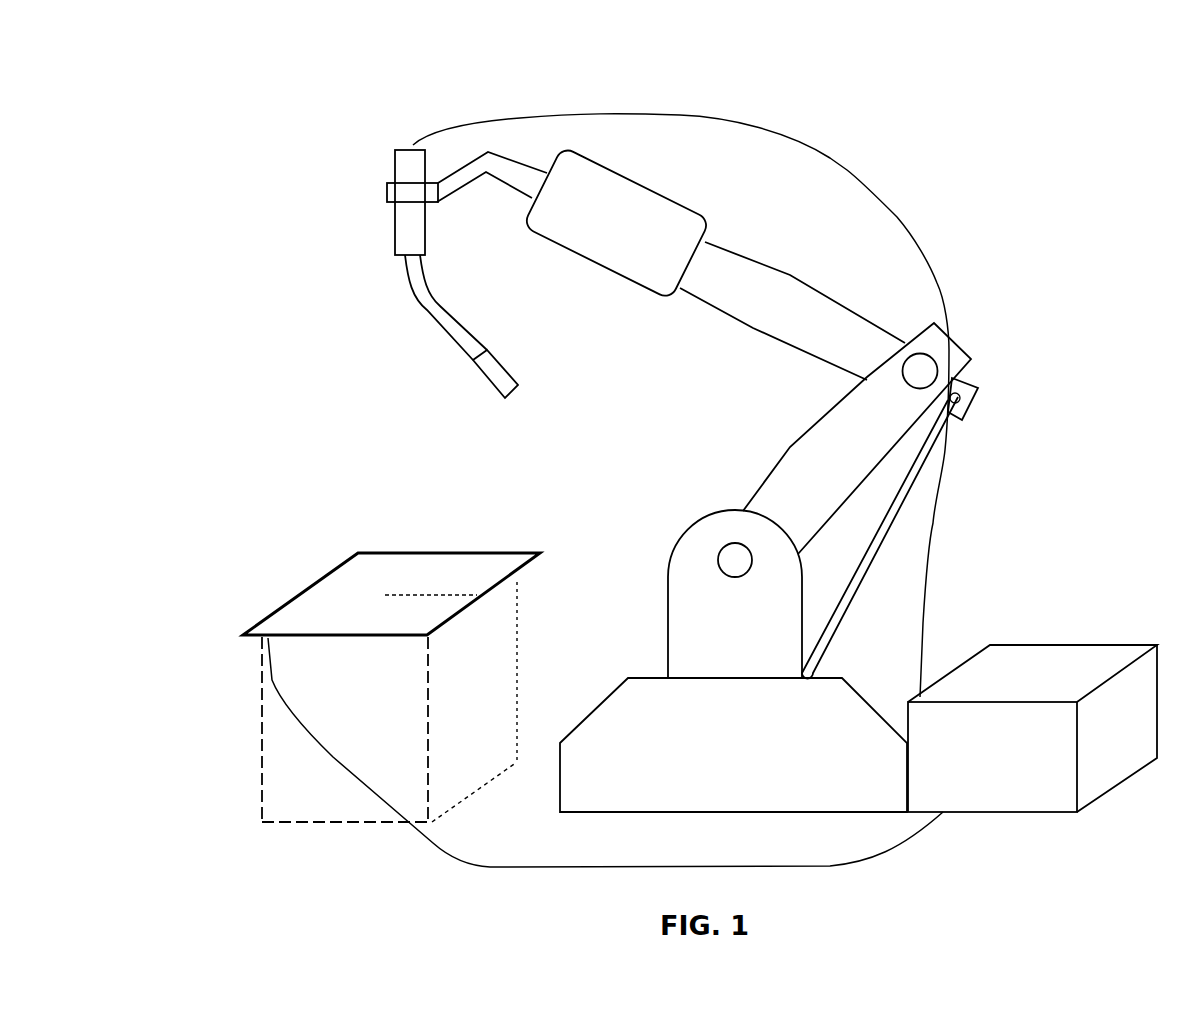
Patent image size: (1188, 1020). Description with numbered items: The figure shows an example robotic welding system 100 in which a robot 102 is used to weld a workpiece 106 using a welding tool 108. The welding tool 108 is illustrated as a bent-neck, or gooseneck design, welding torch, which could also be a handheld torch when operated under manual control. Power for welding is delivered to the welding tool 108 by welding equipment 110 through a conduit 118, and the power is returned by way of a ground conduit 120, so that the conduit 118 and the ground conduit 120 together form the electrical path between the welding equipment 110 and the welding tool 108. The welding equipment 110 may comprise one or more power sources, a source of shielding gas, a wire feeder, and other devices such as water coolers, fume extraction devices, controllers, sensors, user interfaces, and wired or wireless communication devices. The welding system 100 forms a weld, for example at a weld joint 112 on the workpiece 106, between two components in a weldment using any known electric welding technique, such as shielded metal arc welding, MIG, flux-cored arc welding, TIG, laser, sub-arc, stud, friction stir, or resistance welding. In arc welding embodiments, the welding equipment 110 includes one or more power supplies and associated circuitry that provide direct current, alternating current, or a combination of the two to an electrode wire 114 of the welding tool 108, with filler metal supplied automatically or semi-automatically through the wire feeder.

The welding system 100 is at (170, 90).
The robot 102 is at (973, 68).
The workpiece 106 is at (310, 603).
The welding tool 108 is at (437, 449).
The welding equipment 110 is at (1037, 643).
The weld joint 112 is at (428, 593).
The electrode wire 114 is at (515, 393).
The conduit 118 is at (860, 183).
The ground conduit 120 is at (503, 866).